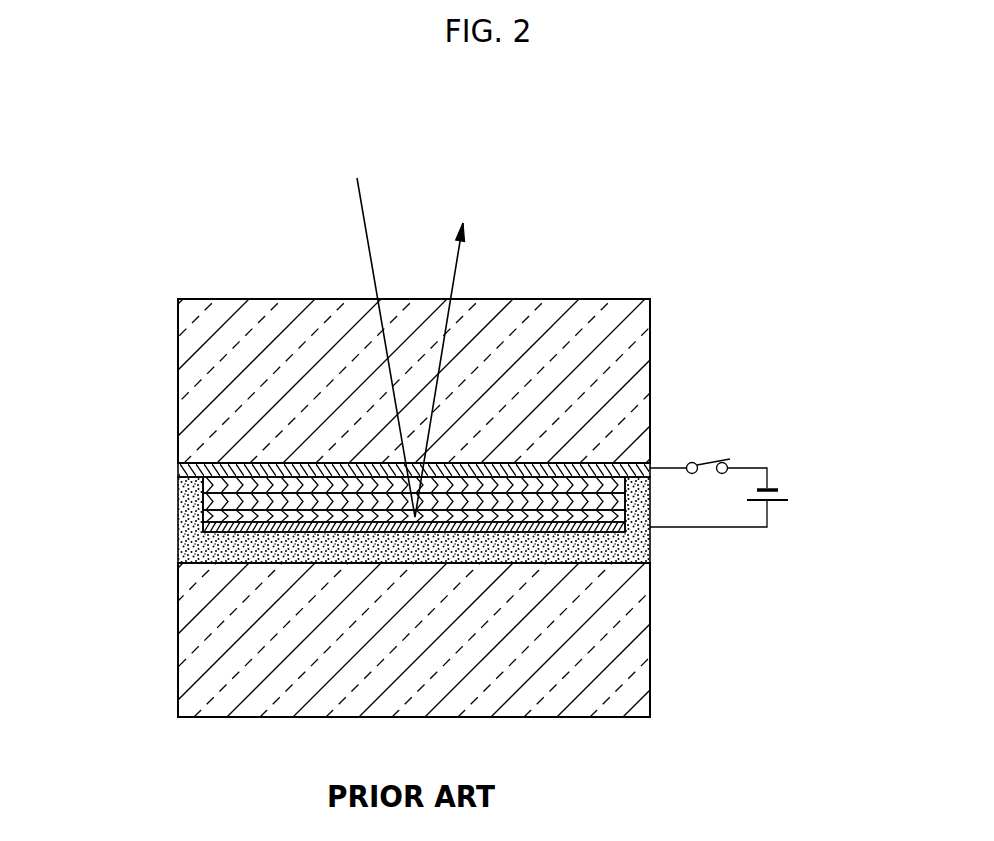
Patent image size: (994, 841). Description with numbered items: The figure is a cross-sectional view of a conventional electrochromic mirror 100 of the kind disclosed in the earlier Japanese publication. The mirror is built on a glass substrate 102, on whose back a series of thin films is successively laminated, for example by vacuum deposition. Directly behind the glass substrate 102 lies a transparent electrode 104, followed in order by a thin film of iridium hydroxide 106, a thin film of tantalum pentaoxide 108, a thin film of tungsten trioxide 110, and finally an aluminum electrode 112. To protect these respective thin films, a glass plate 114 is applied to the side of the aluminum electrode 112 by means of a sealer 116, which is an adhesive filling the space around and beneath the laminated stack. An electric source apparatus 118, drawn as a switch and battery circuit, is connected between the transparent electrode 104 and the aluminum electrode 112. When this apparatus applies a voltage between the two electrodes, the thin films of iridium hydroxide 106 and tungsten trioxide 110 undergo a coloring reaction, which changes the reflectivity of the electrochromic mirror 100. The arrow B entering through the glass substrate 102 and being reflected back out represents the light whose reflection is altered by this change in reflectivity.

The electrochromic mirror 100 is at (558, 228).
The glass substrate 102 is at (180, 333).
The transparent electrode 104 is at (250, 464).
The iridium hydroxide thin film 106 is at (195, 482).
The tantalum pentaoxide thin film 108 is at (195, 500).
The tungsten trioxide thin film 110 is at (196, 518).
The aluminum electrode 112 is at (178, 562).
The glass plate 114 is at (177, 645).
The sealer 116 is at (653, 540).
The electric source apparatus 118 is at (760, 445).
The arrow B is at (368, 242).